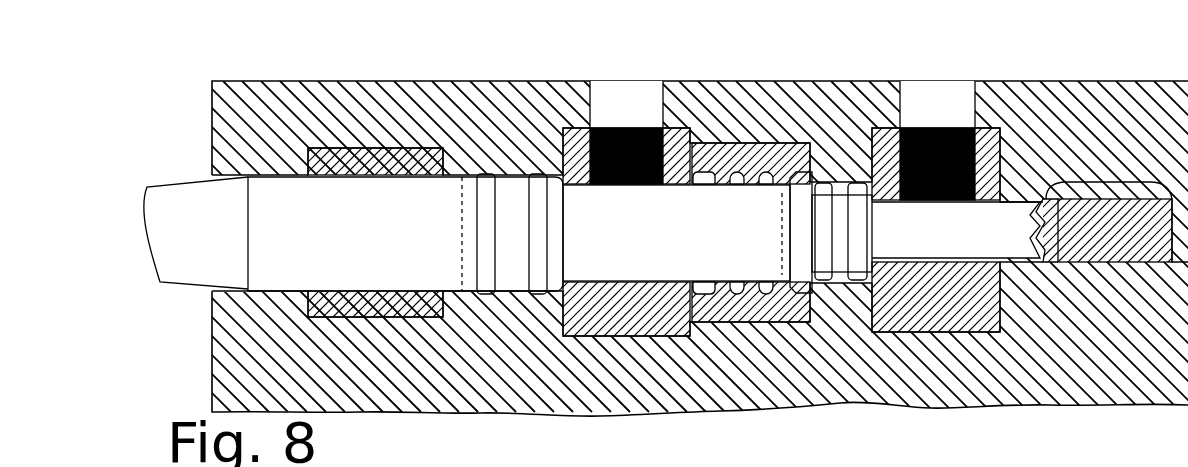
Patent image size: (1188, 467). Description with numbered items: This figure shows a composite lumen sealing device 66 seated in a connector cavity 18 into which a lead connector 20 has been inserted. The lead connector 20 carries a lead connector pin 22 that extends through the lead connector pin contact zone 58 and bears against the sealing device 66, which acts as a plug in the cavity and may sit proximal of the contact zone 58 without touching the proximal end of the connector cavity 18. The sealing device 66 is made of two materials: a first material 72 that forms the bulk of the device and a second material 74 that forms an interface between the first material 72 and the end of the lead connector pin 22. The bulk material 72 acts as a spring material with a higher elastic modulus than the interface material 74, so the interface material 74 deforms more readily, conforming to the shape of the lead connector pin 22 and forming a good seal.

The connector cavity 18 is at (212, 178).
The lead connector 20 is at (192, 272).
The lead connector pin 22 is at (1018, 214).
The lead connector pin contact zone 58 is at (940, 275).
The composite lumen sealing device 66 is at (1108, 183).
The first material 72 is at (1100, 262).
The second material 74 is at (1052, 262).